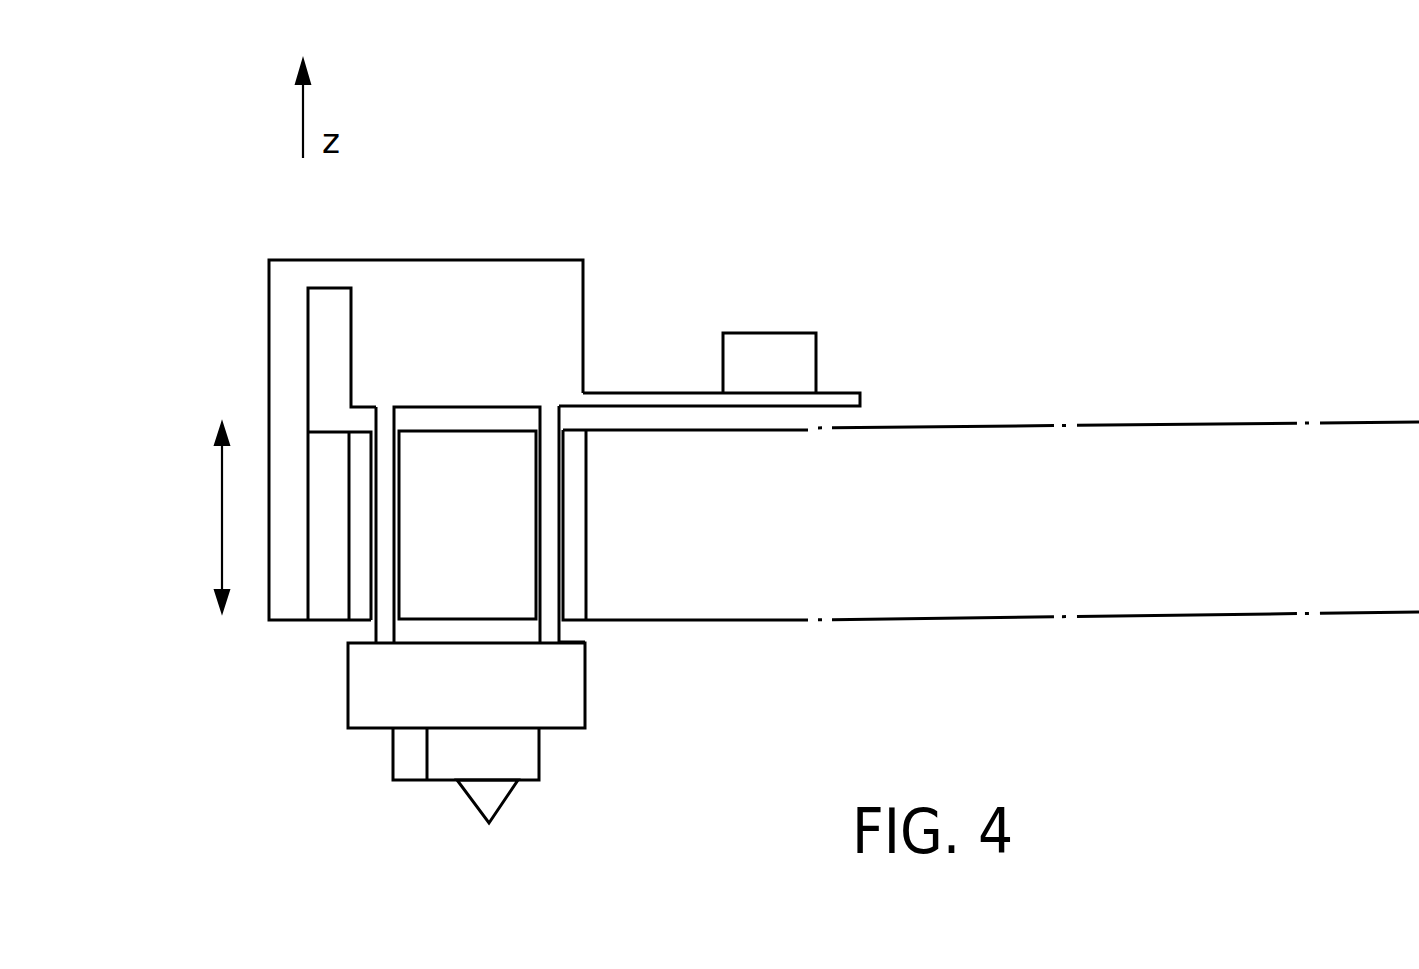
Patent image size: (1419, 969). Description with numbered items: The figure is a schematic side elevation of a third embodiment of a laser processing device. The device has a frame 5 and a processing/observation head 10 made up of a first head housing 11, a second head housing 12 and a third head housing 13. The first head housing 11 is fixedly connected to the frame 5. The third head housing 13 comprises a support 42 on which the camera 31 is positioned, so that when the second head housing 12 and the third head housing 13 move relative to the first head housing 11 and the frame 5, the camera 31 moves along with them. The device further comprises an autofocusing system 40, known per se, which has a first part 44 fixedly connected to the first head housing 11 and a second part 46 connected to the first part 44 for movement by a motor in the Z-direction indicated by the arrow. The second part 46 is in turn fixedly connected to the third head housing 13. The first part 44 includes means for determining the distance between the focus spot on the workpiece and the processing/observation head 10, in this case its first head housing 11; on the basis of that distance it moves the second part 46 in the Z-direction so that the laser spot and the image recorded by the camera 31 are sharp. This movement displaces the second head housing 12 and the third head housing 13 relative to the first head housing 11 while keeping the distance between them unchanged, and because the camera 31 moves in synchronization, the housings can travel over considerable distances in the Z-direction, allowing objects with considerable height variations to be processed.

The frame 5 is at (930, 545).
The processing/observation head 10 is at (638, 283).
The first head housing 11 is at (470, 534).
The second head housing 12 is at (448, 706).
The third head housing 13 is at (458, 342).
The camera 31 is at (788, 332).
The autofocusing system 40 is at (269, 318).
The support 42 is at (862, 393).
The first part 44 is at (336, 607).
The second part 46 is at (288, 607).